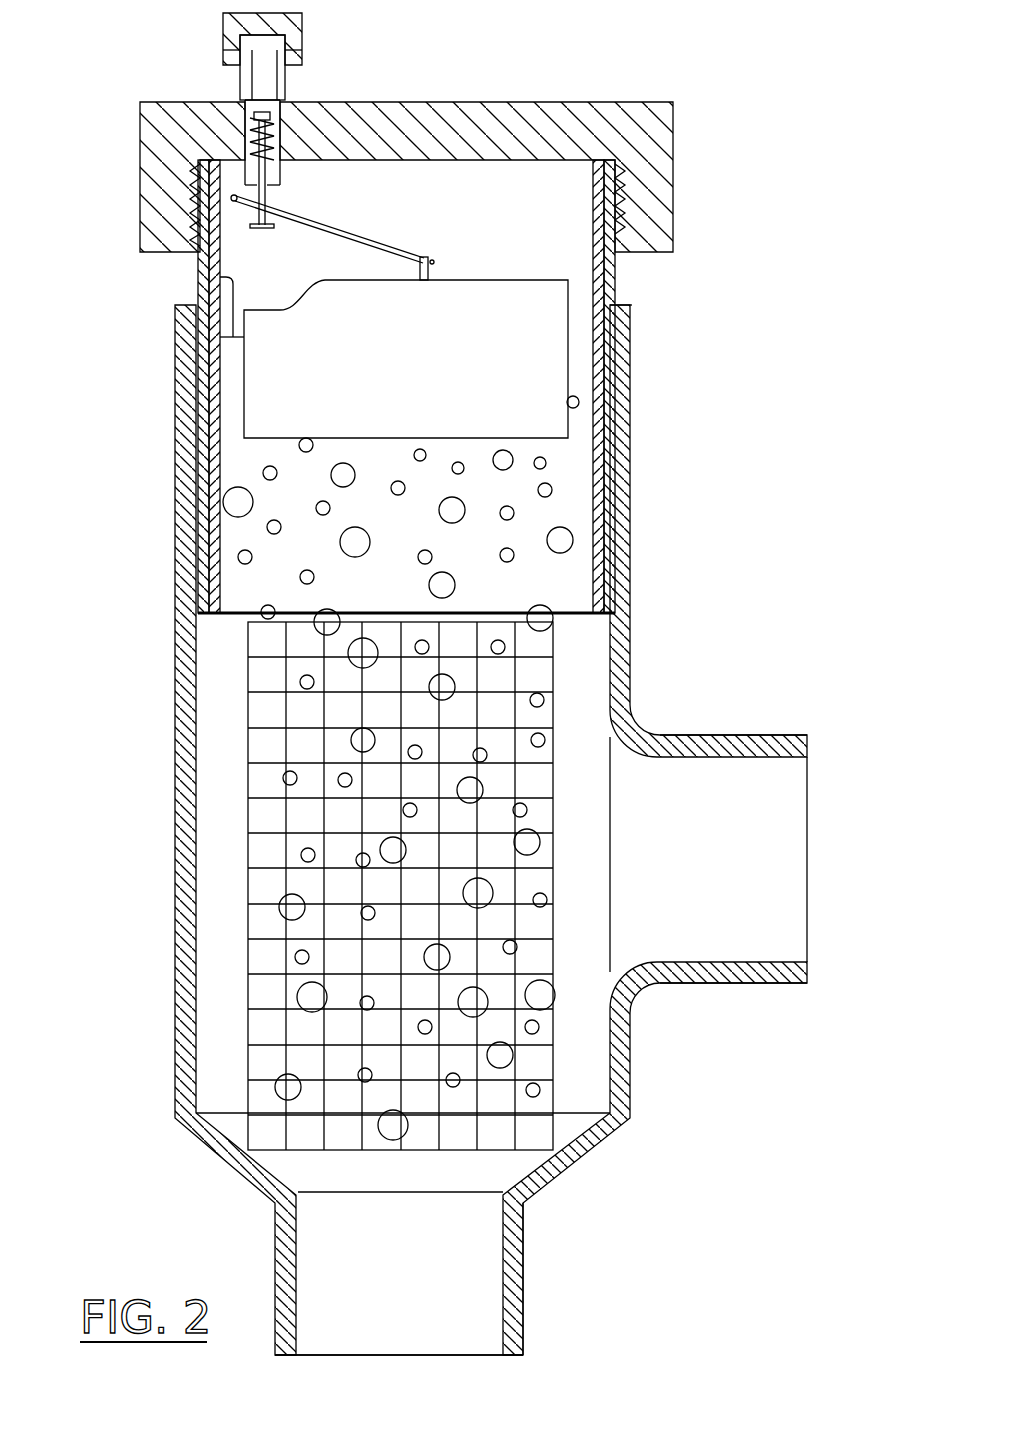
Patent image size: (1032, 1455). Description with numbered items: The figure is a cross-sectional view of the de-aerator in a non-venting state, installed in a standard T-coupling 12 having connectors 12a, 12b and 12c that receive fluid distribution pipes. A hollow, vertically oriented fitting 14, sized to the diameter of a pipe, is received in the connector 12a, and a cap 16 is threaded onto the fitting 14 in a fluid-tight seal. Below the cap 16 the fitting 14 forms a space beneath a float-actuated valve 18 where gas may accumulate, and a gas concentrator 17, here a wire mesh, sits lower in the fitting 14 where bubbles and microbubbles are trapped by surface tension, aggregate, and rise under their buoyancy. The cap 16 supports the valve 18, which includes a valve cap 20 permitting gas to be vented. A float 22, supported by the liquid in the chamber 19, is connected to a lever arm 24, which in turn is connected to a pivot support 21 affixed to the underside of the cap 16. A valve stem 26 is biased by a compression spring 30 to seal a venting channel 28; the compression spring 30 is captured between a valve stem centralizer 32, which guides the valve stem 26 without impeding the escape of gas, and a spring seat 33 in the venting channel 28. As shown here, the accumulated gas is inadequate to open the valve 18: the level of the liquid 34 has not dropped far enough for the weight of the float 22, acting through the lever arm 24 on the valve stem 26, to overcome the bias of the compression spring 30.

The T-coupling 12 is at (636, 557).
The connector 12a is at (632, 306).
The connector 12b is at (773, 733).
The connector 12c is at (525, 1316).
The fitting 14 is at (617, 275).
The cap 16 is at (676, 172).
The gas concentrator 17 is at (548, 1048).
The valve 18 is at (287, 82).
The chamber 19 is at (542, 238).
The valve cap 20 is at (302, 20).
The pivot support 21 is at (228, 188).
The float 22 is at (477, 349).
The lever arm 24 is at (365, 233).
The valve stem 26 is at (272, 193).
The venting channel 28 is at (262, 78).
The compression spring 30 is at (235, 125).
The valve stem centralizer 32 is at (255, 130).
The spring seat 33 is at (200, 170).
The level of the liquid 34 is at (222, 277).